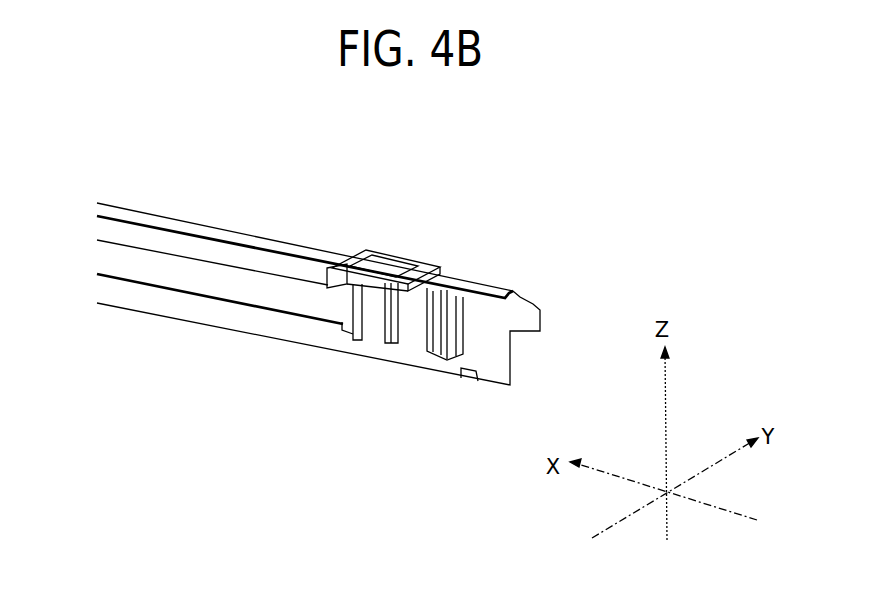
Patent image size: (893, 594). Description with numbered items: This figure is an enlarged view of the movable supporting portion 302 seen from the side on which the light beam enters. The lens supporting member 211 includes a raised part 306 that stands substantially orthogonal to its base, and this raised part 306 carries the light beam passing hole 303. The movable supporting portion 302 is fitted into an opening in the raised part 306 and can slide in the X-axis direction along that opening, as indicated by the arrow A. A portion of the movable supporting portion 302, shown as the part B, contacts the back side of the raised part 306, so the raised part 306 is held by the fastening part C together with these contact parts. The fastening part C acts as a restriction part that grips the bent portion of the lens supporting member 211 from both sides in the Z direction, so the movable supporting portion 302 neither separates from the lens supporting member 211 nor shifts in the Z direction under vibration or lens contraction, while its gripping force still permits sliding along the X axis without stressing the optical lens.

The lens supporting member 211 is at (155, 316).
The movable supporting portion 302 is at (363, 250).
The light beam passing hole 303 is at (153, 267).
The raised part 306 is at (262, 323).
The arrow A is at (463, 252).
The part B is at (448, 354).
The fastening part C is at (382, 284).